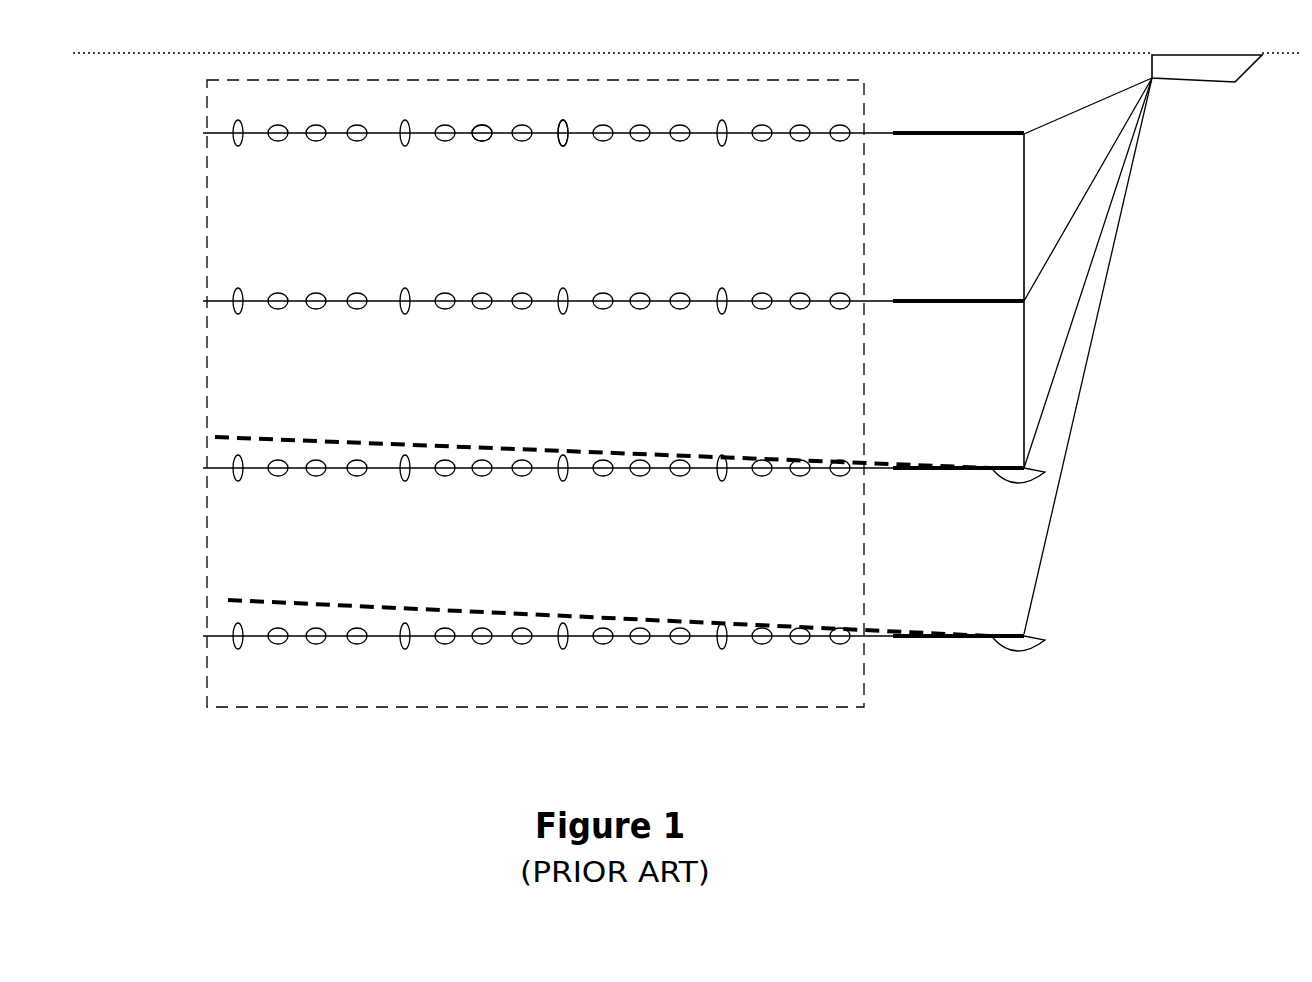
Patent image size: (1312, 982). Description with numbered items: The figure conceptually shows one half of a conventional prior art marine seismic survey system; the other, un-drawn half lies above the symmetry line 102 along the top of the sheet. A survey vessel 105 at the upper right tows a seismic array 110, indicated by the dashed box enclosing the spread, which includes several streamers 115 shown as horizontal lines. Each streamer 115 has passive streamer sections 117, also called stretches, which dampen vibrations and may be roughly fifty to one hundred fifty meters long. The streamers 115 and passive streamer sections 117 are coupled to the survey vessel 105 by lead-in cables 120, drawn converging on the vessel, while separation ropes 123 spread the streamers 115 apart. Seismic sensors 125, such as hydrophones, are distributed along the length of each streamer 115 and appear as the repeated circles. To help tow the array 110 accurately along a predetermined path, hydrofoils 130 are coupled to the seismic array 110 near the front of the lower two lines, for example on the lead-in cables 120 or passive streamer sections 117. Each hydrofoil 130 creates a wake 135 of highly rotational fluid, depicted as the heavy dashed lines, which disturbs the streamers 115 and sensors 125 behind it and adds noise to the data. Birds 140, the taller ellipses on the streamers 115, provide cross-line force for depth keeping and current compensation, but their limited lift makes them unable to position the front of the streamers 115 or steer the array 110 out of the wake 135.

The symmetry line 102 is at (157, 55).
The survey vessel 105 is at (1220, 83).
The seismic array 110 is at (207, 405).
The streamer 115 is at (383, 133).
The passive streamer section 117 is at (935, 305).
The lead-in cable 120 is at (1049, 540).
The separation rope 123 is at (1024, 242).
The seismic sensor 125 is at (485, 142).
The hydrofoil 130 is at (1028, 649).
The wake 135 is at (521, 450).
The bird 140 is at (563, 140).